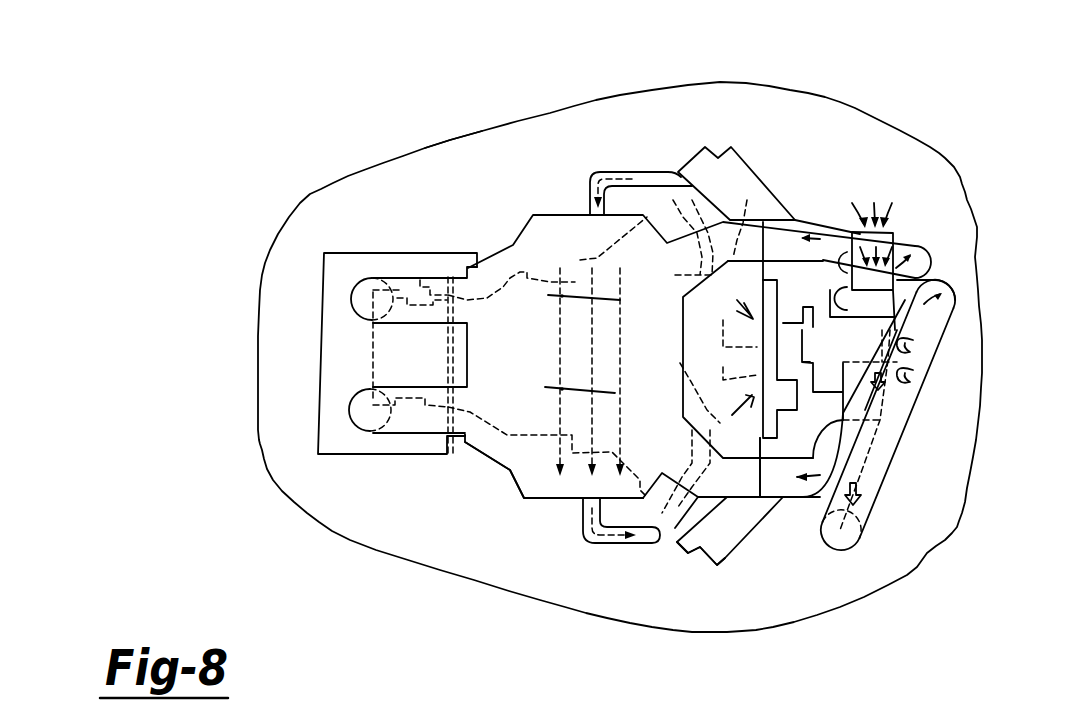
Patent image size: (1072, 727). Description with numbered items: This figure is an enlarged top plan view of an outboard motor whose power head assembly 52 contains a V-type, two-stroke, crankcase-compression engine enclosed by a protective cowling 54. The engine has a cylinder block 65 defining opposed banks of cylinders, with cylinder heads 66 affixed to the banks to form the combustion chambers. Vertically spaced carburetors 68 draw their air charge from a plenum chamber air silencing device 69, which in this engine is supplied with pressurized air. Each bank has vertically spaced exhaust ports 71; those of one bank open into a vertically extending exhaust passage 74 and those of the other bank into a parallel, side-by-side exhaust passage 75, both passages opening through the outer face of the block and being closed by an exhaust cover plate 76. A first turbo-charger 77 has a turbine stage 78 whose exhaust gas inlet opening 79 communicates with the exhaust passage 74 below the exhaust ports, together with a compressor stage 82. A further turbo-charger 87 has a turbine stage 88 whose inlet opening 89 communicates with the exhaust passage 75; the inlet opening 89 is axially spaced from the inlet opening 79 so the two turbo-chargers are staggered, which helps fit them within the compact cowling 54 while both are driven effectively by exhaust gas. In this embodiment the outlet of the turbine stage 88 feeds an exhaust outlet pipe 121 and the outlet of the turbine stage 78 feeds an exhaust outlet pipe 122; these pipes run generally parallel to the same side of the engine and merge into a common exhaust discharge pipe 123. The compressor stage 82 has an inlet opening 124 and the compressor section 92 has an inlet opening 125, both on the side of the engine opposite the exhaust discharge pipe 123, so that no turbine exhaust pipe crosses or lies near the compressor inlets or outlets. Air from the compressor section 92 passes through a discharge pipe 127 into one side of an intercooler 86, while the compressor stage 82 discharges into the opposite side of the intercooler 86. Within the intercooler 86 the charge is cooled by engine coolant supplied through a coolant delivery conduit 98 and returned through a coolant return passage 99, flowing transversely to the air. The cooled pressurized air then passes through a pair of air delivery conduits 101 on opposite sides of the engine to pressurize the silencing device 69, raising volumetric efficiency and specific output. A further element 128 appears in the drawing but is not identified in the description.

The power head assembly 52 is at (533, 158).
The protective cowling 54 is at (453, 140).
The cylinder block 65 is at (677, 540).
The cylinder heads 66 is at (718, 548).
The carburetors 68 is at (373, 363).
The plenum chamber air silencing device 69 is at (360, 458).
The exhaust port 71 is at (757, 235).
The exhaust passage 74 is at (700, 340).
The exhaust passage 75 is at (767, 310).
The exhaust cover plate 76 is at (765, 430).
The first turbo-charger 77 is at (952, 304).
The turbine stage 78 is at (913, 378).
The exhaust gas inlet opening 79 is at (841, 405).
The compressor stage 82 is at (953, 288).
The intercooler 86 is at (539, 480).
The turbo-charger 87 is at (929, 241).
The turbine stage 88 is at (913, 343).
The inlet opening 89 is at (803, 374).
The compressor section 92 is at (937, 251).
The coolant delivery conduit 98 is at (618, 172).
The coolant return passage 99 is at (597, 546).
The air delivery conduits 101 is at (407, 279).
The exhaust outlet pipe 121 is at (890, 432).
The exhaust outlet pipe 122 is at (882, 467).
The exhaust discharge pipe 123 is at (863, 543).
The inlet opening 124 is at (895, 257).
The inlet opening 125 is at (880, 220).
The discharge pipe 127 is at (815, 222).
The curved wall 128 is at (817, 560).